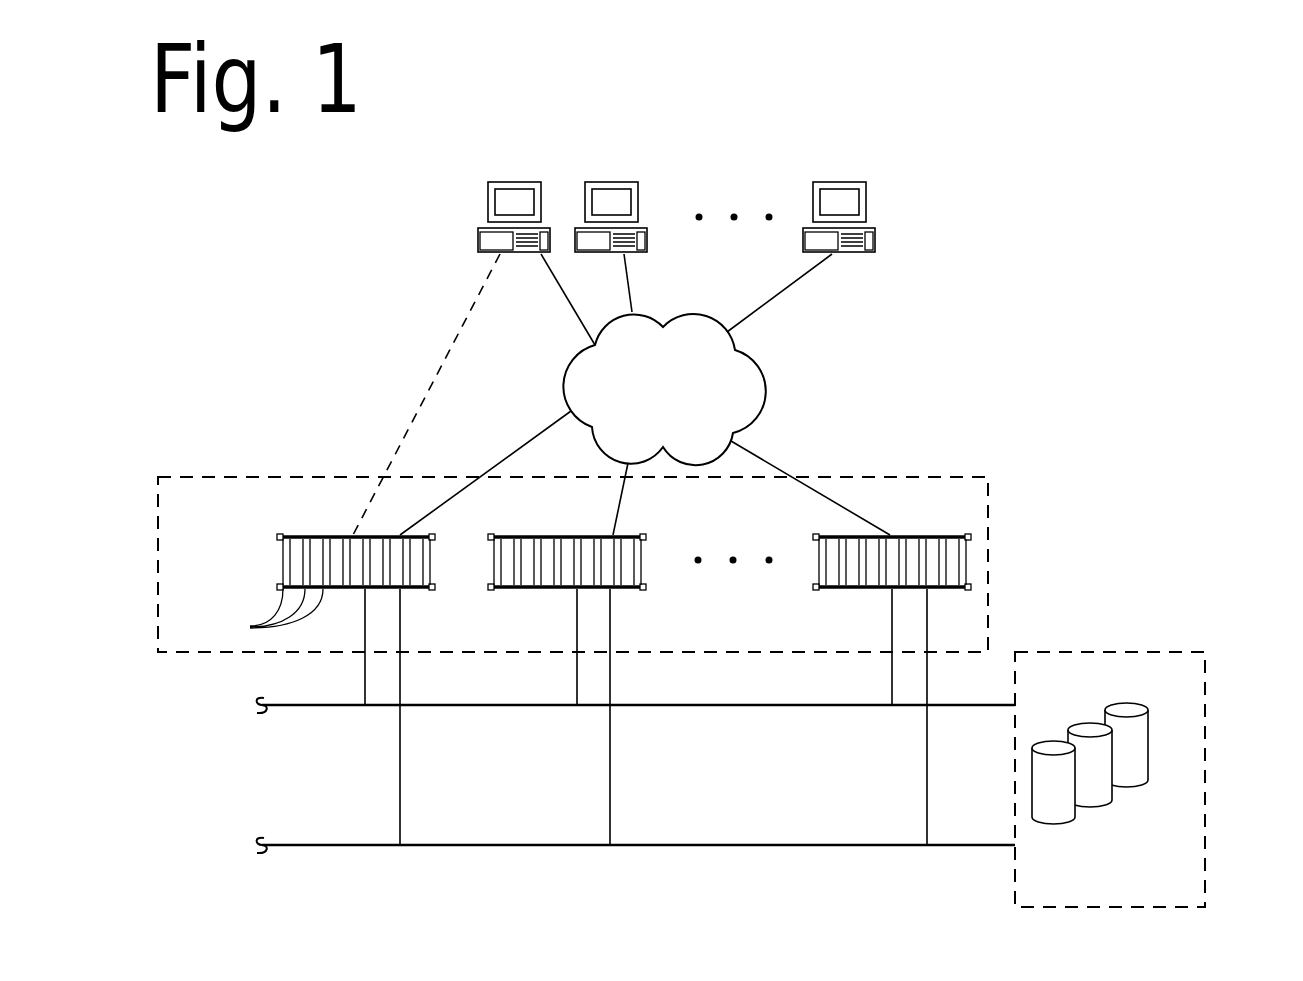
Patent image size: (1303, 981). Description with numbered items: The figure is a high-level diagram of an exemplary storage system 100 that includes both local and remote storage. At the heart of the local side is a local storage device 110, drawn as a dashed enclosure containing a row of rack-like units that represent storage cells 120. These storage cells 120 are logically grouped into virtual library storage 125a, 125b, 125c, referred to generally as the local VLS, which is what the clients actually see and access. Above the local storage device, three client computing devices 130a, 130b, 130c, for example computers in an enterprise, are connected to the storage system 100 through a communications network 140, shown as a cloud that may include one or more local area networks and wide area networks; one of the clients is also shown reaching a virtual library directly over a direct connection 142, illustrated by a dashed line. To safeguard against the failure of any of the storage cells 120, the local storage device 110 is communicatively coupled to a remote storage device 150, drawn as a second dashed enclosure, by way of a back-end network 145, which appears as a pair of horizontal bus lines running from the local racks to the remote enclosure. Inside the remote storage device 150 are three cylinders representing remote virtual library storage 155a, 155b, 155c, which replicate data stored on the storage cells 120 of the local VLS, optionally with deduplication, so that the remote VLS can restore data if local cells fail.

The storage system 100 is at (1180, 172).
The local storage device 110 is at (945, 477).
The storage cells 120 is at (263, 614).
The virtual library storage 125a is at (291, 530).
The virtual library storage 125b is at (577, 530).
The virtual library storage 125c is at (823, 530).
The client computing device 130a is at (512, 182).
The client computing device 130b is at (607, 182).
The client computing device 130c is at (836, 182).
The communications network 140 is at (768, 390).
The direct connection 142 is at (430, 386).
The back-end network 145 is at (772, 705).
The remote storage device 150 is at (1165, 652).
The remote virtual library storage 155a is at (1052, 821).
The remote virtual library storage 155b is at (1092, 804).
The remote virtual library storage 155c is at (1128, 784).